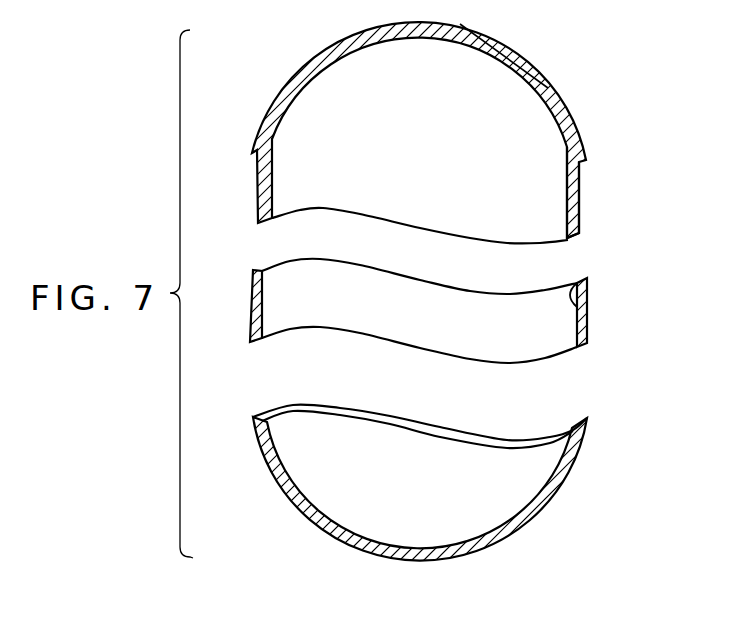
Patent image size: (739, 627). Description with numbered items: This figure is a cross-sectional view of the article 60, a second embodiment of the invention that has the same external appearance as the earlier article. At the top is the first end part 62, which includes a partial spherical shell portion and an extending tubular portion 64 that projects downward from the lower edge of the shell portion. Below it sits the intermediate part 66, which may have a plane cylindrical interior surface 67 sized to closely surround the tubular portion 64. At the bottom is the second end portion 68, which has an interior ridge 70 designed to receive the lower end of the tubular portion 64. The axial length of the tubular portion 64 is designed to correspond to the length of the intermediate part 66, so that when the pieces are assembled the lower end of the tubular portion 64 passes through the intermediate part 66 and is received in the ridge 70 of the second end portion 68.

The article 60 is at (218, 244).
The first end part 62 is at (273, 101).
The tubular portion 64 is at (580, 203).
The intermediate part 66 is at (588, 318).
The plane cylindrical interior surface 67 is at (576, 280).
The second end portion 68 is at (572, 472).
The interior ridge 70 is at (293, 405).